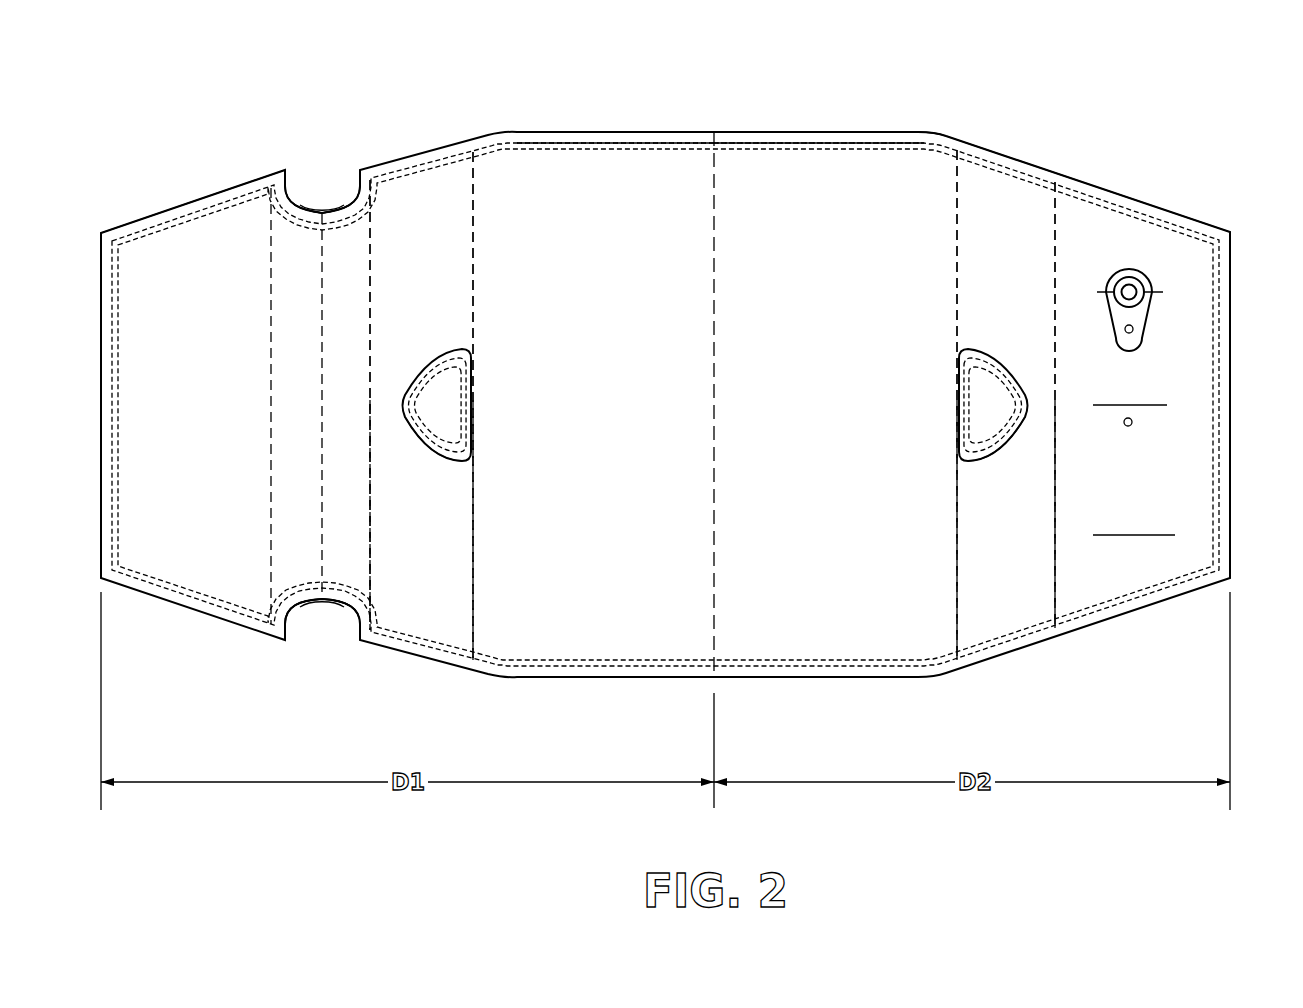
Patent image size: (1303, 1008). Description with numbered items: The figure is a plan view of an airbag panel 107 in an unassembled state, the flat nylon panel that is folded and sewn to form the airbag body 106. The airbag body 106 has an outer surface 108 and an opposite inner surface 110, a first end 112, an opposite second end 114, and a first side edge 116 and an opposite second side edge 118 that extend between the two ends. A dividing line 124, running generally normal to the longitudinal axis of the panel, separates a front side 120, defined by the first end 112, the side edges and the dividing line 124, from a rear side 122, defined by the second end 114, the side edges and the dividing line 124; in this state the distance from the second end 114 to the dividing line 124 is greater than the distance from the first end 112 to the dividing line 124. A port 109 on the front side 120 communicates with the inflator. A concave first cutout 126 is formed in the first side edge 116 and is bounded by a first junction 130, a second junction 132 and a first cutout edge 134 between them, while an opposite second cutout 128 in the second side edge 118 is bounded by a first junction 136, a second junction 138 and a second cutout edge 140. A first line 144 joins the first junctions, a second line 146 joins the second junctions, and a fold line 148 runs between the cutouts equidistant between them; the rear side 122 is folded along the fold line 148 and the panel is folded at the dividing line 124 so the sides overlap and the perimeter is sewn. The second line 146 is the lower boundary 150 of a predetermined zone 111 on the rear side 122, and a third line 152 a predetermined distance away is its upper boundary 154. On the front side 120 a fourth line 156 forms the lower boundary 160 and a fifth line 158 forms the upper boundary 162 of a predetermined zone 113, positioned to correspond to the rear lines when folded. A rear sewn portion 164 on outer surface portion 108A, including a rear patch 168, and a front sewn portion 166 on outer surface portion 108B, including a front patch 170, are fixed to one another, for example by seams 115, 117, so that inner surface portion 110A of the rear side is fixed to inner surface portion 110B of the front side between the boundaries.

The airbag body 106 is at (1105, 680).
The airbag panel 107 is at (1014, 101).
The outer surface 108 is at (592, 165).
The outer surface portion 108A is at (578, 165).
The outer surface portion 108B is at (765, 165).
The port 109 is at (1131, 268).
The inner surface 110 is at (680, 165).
The inner surface portion 110A is at (514, 178).
The inner surface portion 110B is at (795, 178).
The predetermined zone 111 is at (438, 605).
The first end 112 is at (1231, 325).
The predetermined zone 113 is at (994, 607).
The second end 114 is at (100, 320).
The seam 115 is at (470, 398).
The first side edge 116 is at (873, 130).
The seam 117 is at (959, 402).
The second side edge 118 is at (838, 678).
The front side 120 is at (1096, 168).
The rear side 122 is at (190, 186).
The dividing line 124 is at (716, 242).
The first cutout 126 is at (338, 170).
The second cutout 128 is at (330, 647).
The first junction 130 is at (285, 168).
The second junction 132 is at (362, 170).
The first cutout edge 134 is at (302, 203).
The first junction 136 is at (282, 648).
The second junction 138 is at (362, 648).
The second cutout edge 140 is at (310, 605).
The first line 144 is at (270, 325).
The second line 146 is at (372, 283).
The fold line 148 is at (323, 308).
The lower boundary 150 is at (372, 515).
The third line 152 is at (474, 300).
The upper boundary 154 is at (474, 521).
The fourth line 156 is at (1057, 284).
The fifth line 158 is at (956, 265).
The lower boundary 160 is at (1057, 457).
The upper boundary 162 is at (957, 522).
The rear sewn portion 164 is at (477, 409).
The front sewn portion 166 is at (941, 412).
The rear patch 168 is at (450, 458).
The front patch 170 is at (1001, 460).